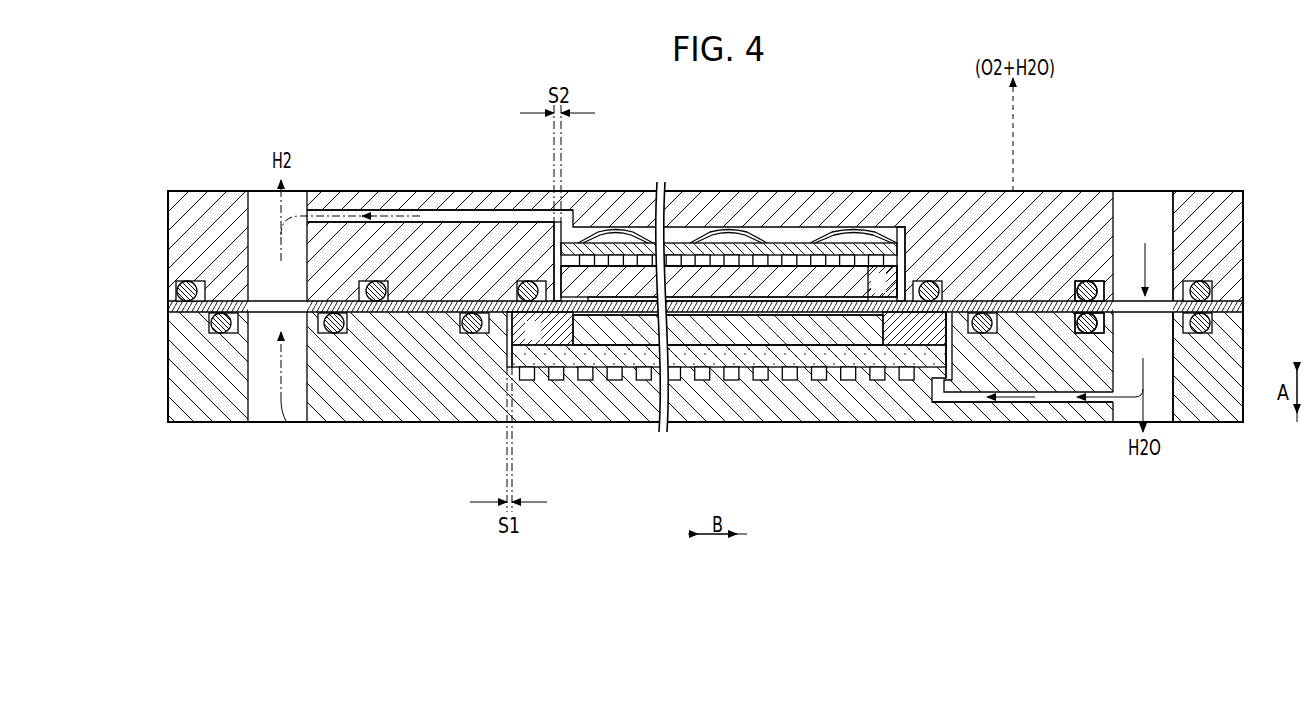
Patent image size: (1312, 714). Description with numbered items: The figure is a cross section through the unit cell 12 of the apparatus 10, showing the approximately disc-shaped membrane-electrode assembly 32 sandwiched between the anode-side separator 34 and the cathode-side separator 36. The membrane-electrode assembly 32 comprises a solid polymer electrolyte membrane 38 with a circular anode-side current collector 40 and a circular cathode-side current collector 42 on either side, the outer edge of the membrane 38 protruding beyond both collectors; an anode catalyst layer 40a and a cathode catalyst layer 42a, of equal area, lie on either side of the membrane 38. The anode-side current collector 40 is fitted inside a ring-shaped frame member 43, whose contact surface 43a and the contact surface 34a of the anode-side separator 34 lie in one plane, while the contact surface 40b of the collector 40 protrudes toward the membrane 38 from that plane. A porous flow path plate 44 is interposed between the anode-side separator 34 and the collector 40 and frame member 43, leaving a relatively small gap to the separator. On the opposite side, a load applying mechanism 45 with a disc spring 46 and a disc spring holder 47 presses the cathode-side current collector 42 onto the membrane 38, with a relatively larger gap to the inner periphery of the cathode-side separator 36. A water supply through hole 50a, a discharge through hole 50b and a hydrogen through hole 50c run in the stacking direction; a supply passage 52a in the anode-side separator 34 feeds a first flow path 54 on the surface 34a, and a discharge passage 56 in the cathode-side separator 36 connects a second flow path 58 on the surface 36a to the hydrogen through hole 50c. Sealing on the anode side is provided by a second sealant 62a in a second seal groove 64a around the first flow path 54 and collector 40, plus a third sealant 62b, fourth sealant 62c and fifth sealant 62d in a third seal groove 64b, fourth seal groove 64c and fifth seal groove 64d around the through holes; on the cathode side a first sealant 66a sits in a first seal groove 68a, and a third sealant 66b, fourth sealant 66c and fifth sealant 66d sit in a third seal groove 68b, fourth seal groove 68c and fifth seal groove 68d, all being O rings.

The water electrolysis apparatus 10 is at (934, 107).
The unit cell 12 is at (897, 107).
The membrane-electrode assembly 32 is at (166, 301).
The anode-side separator 34 is at (166, 359).
The contact surface of the anode-side separator 34a is at (1212, 335).
The cathode-side separator 36 is at (166, 239).
The surface of the cathode-side separator 36a is at (1190, 260).
The solid polymer electrolyte membrane 38 is at (749, 332).
The anode-side current collector 40 is at (812, 366).
The anode catalyst layer 40a is at (776, 346).
The contact surface of the anode-side current collector 40b is at (586, 297).
The cathode-side current collector 42 is at (805, 280).
The cathode catalyst layer 42a is at (760, 262).
The frame member 43 is at (903, 368).
The contact surface of the frame member 43a is at (926, 368).
The flow path plate 44 is at (840, 362).
The load applying mechanism 45 is at (872, 223).
The disc spring 46 is at (630, 245).
The disc spring holder 47 is at (838, 240).
The water supply through hole 50a is at (1135, 192).
The discharge through hole 50b is at (1144, 288).
The hydrogen through hole 50c is at (285, 418).
The supply passage 52a is at (962, 398).
The first flow path 54 is at (600, 385).
The discharge passage 56 is at (443, 210).
The second flow path 58 is at (745, 232).
The second sealant 62a is at (466, 333).
The third sealant 62b is at (1080, 333).
The fourth sealant 62c is at (1087, 323).
The fifth sealant 62d is at (216, 333).
The second seal groove 64a is at (482, 333).
The third seal groove 64b is at (1095, 333).
The fourth seal groove 64c is at (1089, 323).
The fifth seal groove 64d is at (236, 333).
The first sealant 66a is at (522, 284).
The third sealant 66b is at (1080, 285).
The fourth sealant 66c is at (1087, 291).
The fifth sealant 66d is at (380, 292).
The first seal groove 68a is at (534, 281).
The third seal groove 68b is at (1088, 281).
The fourth seal groove 68c is at (1089, 291).
The fifth seal groove 68d is at (366, 281).